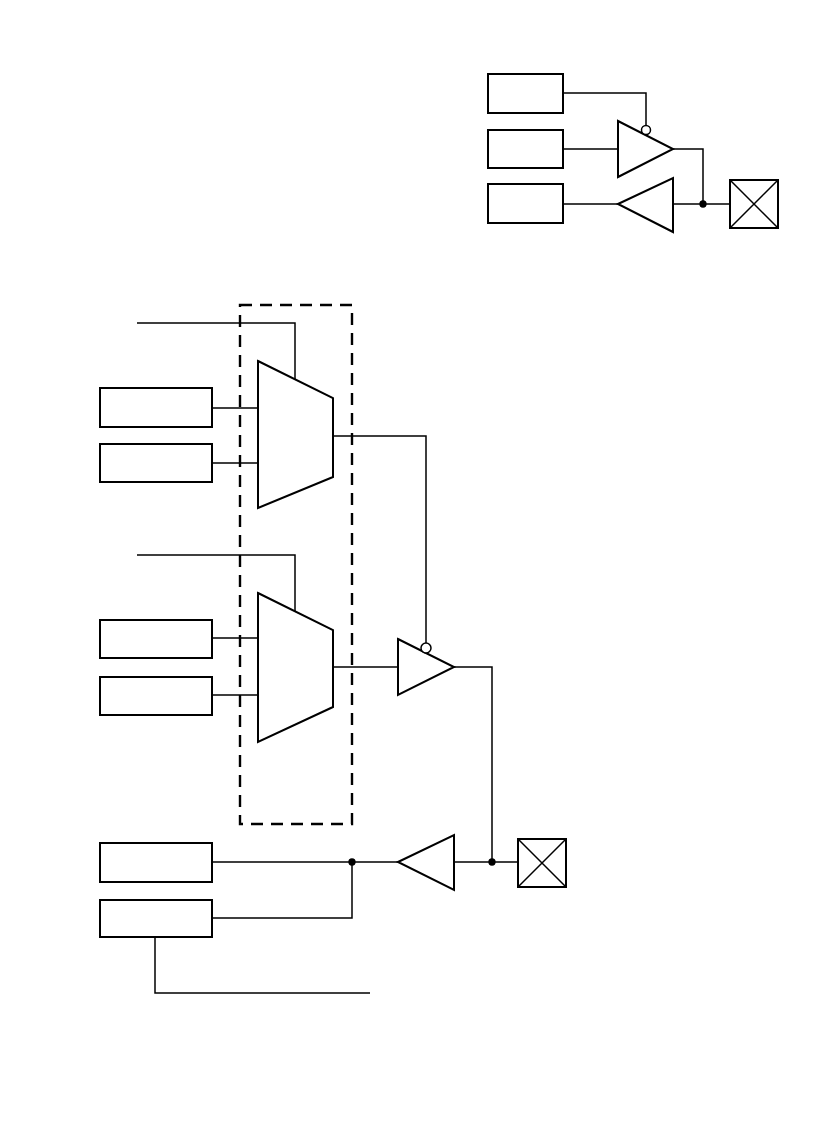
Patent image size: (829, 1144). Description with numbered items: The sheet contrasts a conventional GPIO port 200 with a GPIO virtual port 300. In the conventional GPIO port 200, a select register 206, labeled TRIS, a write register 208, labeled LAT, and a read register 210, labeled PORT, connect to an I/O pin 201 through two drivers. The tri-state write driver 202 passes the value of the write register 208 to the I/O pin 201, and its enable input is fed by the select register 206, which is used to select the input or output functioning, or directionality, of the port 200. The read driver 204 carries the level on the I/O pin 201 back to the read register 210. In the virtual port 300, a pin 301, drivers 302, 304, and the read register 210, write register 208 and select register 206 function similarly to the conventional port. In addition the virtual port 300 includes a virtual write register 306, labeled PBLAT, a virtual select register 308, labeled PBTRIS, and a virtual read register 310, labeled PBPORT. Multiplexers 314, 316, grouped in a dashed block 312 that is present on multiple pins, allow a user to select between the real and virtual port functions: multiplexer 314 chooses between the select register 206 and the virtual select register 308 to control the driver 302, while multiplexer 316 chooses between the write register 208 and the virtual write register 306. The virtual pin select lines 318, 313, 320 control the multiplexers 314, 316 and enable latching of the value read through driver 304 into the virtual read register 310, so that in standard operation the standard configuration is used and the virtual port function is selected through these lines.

In FIG. 2, the conventional GPIO port 200 is at (513, 53).
In FIG. 2, the I/O pin 201 is at (752, 229).
In FIG. 2, the tri-state write driver 202 is at (667, 135).
In FIG. 2, the read driver 204 is at (650, 222).
In FIG. 2, the select register (TRIS) 206 is at (488, 83).
In FIG. 3, the select register (TRIS) 206 is at (100, 396).
In FIG. 2, the write register (LAT) 208 is at (488, 139).
In FIG. 3, the write register (LAT) 208 is at (100, 650).
In FIG. 2, the read register (PORT) 210 is at (488, 212).
In FIG. 3, the read register (PORT) 210 is at (100, 872).
In FIG. 3, the GPIO virtual port 300 is at (146, 246).
In FIG. 3, the pin 301 is at (566, 875).
In FIG. 3, the driver 302 is at (428, 685).
In FIG. 3, the driver 304 is at (420, 878).
In FIG. 3, the virtual write (PBLAT) register 306 is at (100, 451).
In FIG. 3, the virtual select (TRIS) register 308 is at (100, 705).
In FIG. 3, the virtual read (PBPORT) register 310 is at (100, 927).
In FIG. 3, the multiplexer block present on multiple pins 312 is at (306, 302).
In FIG. 3, the virtual pin select line 313 is at (207, 557).
In FIG. 3, the multiplexer 314 is at (300, 491).
In FIG. 3, the multiplexer 316 is at (297, 725).
In FIG. 3, the virtual pin select line 318 is at (217, 323).
In FIG. 3, the virtual pin select line 320 is at (258, 993).